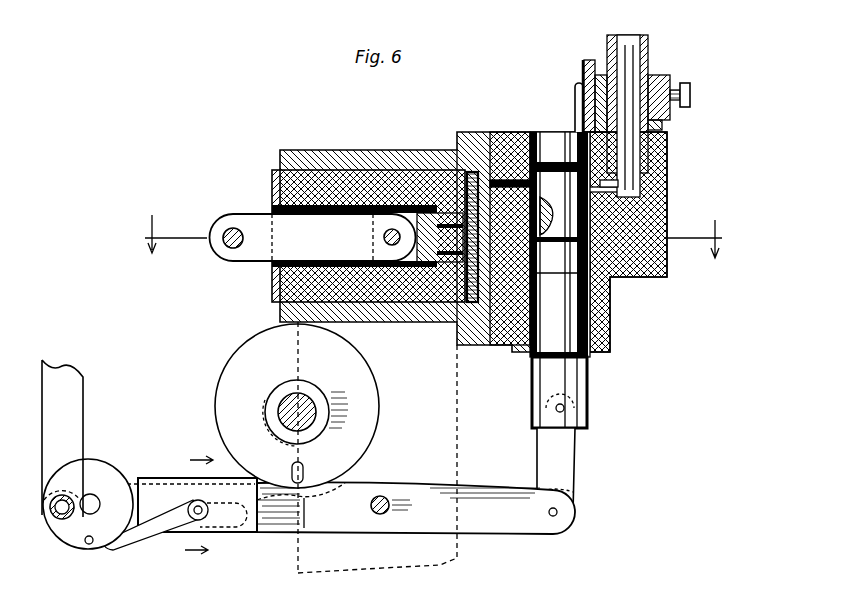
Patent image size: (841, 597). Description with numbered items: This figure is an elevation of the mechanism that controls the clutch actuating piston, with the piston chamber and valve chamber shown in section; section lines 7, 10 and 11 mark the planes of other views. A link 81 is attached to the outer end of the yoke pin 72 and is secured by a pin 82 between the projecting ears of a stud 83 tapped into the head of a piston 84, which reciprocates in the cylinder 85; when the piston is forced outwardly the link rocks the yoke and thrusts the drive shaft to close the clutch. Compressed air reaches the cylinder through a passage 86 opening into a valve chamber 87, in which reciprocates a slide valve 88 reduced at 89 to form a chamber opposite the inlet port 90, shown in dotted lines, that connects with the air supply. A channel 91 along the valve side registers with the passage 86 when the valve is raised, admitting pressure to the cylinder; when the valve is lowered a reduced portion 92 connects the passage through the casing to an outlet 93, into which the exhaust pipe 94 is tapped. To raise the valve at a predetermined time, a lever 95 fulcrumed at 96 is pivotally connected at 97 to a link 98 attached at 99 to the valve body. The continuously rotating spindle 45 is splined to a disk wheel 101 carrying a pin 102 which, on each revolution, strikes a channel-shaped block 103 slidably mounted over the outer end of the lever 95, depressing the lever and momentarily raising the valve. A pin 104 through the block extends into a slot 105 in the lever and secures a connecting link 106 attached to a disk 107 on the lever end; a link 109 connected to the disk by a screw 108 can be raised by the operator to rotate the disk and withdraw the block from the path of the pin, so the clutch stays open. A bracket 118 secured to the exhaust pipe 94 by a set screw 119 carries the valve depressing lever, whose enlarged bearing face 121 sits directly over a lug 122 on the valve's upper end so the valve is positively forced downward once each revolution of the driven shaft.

The section line 7— 7 is at (431, 236).
The section line 10— 10 is at (317, 512).
The section line 11— 11 is at (192, 503).
The spindle 45 is at (312, 407).
The pin 72 is at (231, 229).
The link 81 is at (243, 250).
The pin 82 is at (383, 237).
The stud 83 is at (428, 217).
The piston 84 is at (300, 178).
The cylinder 85 is at (372, 168).
The passage 86 is at (497, 185).
The valve chamber 87 is at (592, 256).
The slide valve 88 is at (542, 353).
The reduced part 89 is at (592, 267).
The inlet port 90 is at (557, 235).
The channel 91 is at (532, 183).
The reduced portion 92 is at (575, 163).
The outlet 93 is at (640, 182).
The exhaust pipe 94 is at (648, 43).
The lever 95 is at (492, 520).
The fulcrum 96 is at (383, 498).
The pivot 97 is at (558, 512).
The link 98 is at (576, 463).
The attachment point 99 is at (566, 404).
The disk wheel 101 is at (233, 400).
The pin 102 is at (304, 474).
The block 103 is at (233, 527).
The pin 104 is at (198, 515).
The slot 105 is at (255, 535).
The connecting link 106 is at (132, 540).
The disk 107 is at (67, 540).
The screw 108 is at (62, 498).
The link 109 is at (80, 398).
The bracket 118 is at (668, 75).
The set screw 119 is at (690, 95).
The bearing face 121 is at (578, 87).
The lug 122 is at (593, 60).